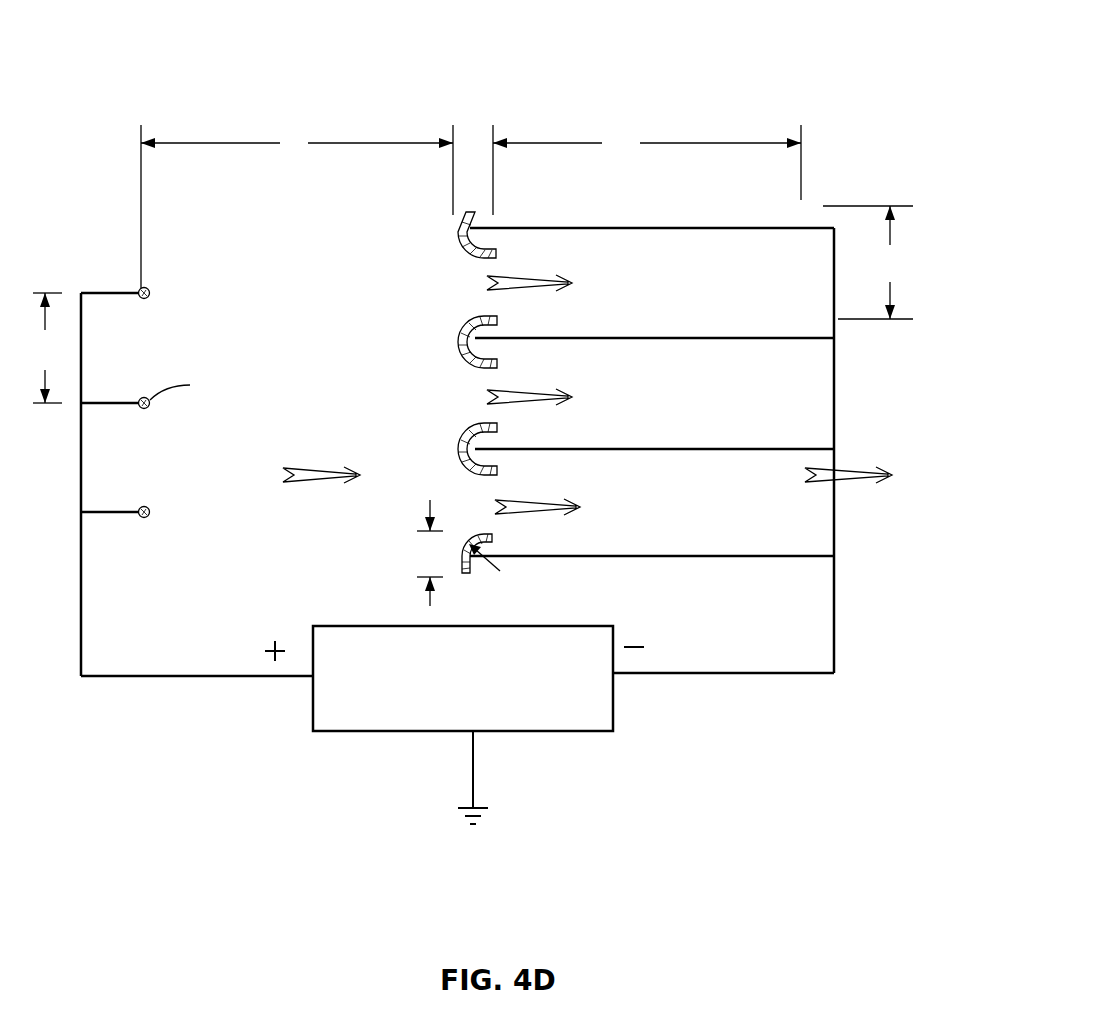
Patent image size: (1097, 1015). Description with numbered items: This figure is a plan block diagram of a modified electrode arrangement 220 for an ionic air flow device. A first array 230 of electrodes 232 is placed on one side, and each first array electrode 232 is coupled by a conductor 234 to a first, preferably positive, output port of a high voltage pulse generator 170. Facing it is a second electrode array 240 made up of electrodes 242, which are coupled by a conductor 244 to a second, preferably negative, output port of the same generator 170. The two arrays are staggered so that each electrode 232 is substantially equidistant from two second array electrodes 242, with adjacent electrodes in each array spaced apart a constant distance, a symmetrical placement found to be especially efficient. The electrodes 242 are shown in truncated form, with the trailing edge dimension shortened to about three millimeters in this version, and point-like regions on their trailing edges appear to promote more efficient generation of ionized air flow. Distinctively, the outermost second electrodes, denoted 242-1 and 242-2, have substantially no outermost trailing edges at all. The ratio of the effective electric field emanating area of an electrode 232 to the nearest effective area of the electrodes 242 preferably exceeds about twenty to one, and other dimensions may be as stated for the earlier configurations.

The ozone generating reactor 220 is at (148, 52).
The first array 230 is at (258, 338).
The first array electrode 232 is at (148, 288).
The conductor 234 is at (83, 622).
The second electrode array 240 is at (388, 338).
The second array electrode 242 is at (460, 338).
The outermost second electrode 242-1 is at (458, 228).
The outermost second electrode 242-2 is at (467, 574).
The conductor 244 is at (701, 672).
The high voltage pulse generator 170 is at (378, 626).